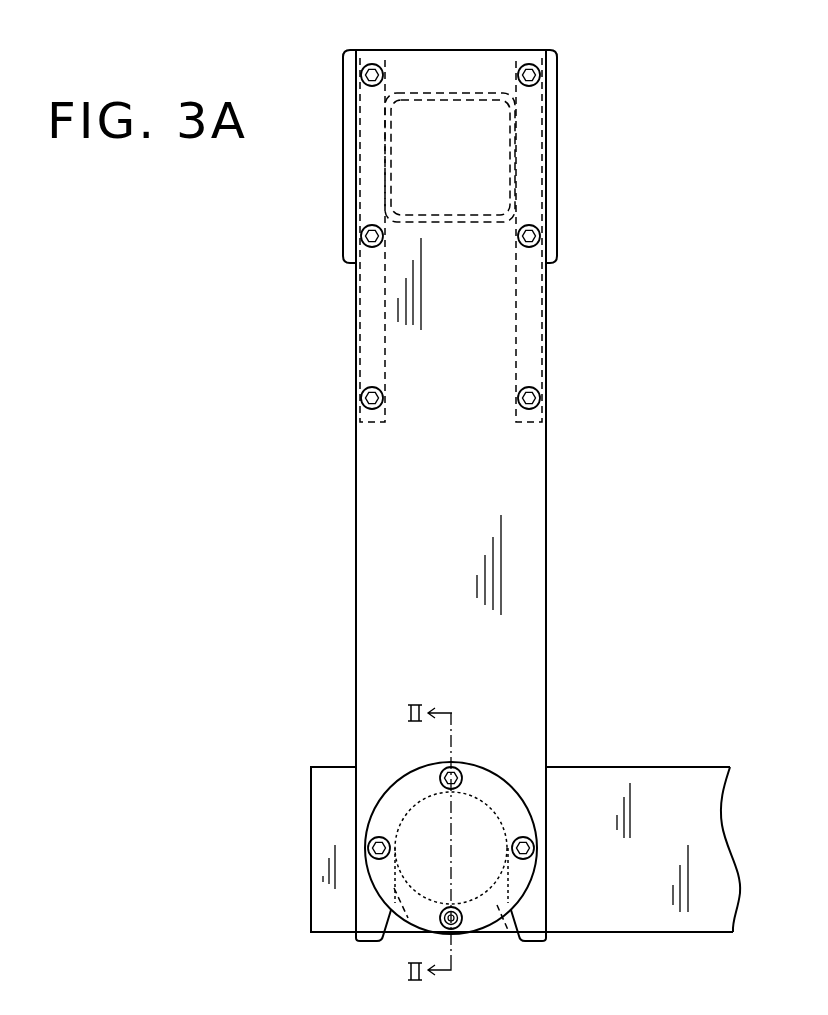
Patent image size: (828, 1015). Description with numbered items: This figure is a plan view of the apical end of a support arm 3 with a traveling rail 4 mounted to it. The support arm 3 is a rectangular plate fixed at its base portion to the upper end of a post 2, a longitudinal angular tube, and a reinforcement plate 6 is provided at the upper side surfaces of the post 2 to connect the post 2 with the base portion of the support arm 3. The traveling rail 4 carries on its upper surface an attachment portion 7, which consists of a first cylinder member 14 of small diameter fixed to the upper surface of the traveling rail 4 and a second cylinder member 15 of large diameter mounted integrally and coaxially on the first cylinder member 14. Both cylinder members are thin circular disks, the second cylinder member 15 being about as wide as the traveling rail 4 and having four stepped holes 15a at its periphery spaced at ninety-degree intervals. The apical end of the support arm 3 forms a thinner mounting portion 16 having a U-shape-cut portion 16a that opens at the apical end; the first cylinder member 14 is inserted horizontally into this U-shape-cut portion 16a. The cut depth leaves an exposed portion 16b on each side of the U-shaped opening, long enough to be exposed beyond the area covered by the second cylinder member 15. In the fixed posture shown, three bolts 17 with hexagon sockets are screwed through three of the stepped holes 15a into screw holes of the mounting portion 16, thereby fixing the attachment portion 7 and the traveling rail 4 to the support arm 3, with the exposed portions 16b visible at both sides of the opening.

The post 2 is at (438, 92).
The support arm 3 is at (538, 498).
The traveling rail 4 is at (690, 775).
The reinforcement plate 6 is at (343, 163).
The attachment portion 7 is at (505, 925).
The first cylinder member 14 is at (475, 898).
The second cylinder member 15 is at (500, 790).
The stepped hole 15a is at (536, 851).
The mounting portion 16 is at (338, 903).
The U-shape-cut portion 16a is at (404, 923).
The exposed portion 16b is at (366, 941).
The bolt 17 is at (460, 771).